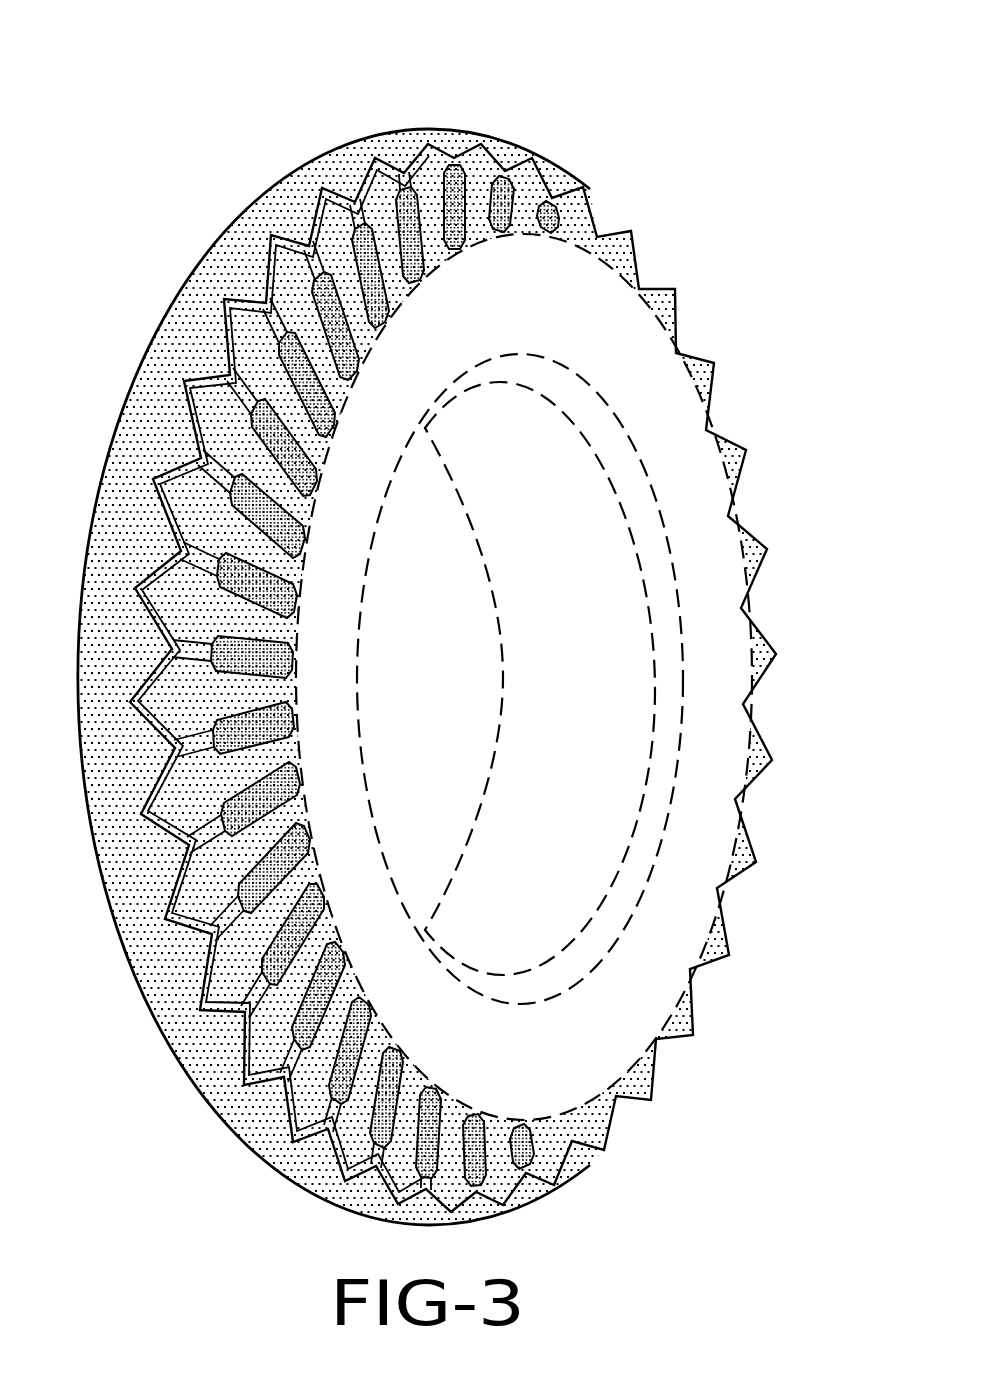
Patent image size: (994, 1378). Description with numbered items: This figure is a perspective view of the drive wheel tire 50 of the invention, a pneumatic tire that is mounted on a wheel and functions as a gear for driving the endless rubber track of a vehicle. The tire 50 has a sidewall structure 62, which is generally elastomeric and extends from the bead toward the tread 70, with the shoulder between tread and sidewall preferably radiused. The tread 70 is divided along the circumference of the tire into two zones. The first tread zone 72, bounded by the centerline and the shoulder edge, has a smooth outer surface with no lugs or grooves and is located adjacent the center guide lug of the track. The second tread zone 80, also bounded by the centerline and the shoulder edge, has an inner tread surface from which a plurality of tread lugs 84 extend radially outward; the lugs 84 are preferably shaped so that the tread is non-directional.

The drive wheel tire 50 is at (770, 198).
The sidewall structure 62 is at (320, 693).
The tread 70 is at (364, 119).
The first tread zone 72 is at (223, 214).
The second tread zone 80 is at (451, 133).
The tread lug 84 is at (253, 298).